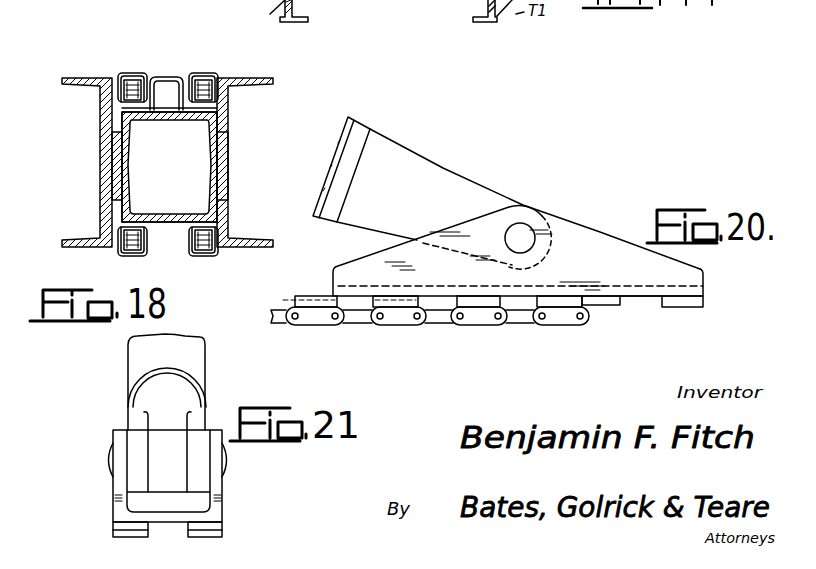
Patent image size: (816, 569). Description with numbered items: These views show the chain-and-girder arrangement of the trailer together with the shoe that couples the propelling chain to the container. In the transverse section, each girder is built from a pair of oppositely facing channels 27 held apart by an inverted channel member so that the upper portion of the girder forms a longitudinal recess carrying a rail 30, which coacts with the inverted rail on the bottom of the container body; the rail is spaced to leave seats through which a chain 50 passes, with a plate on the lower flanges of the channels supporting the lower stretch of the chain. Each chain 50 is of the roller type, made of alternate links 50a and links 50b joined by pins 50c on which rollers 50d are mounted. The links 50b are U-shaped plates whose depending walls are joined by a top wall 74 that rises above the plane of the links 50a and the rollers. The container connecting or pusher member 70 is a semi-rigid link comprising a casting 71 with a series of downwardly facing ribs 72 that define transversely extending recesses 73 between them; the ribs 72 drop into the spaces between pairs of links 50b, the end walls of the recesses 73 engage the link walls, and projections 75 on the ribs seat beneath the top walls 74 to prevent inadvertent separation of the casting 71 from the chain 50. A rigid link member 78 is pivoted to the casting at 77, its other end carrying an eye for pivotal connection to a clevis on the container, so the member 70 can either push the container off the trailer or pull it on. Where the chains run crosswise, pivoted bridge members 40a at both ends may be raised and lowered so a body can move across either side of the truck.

In FIG. 18, the channel 27 is at (100, 154).
In FIG. 18, the rail 30 is at (168, 77).
In FIG. 18, the pivoted bridge member 40a is at (215, 165).
In FIG. 20, the chain 50 is at (364, 325).
In FIG. 18, the link 50a is at (120, 74).
In FIG. 20, the link 50a is at (441, 325).
In FIG. 18, the link 50b is at (218, 77).
In FIG. 20, the link 50b is at (484, 326).
In FIG. 20, the pin 50c is at (463, 326).
In FIG. 18, the roller 50d is at (207, 73).
In FIG. 20, the container connecting or pusher member 70 is at (443, 190).
In FIG. 21, the container connecting or pusher member 70 is at (194, 358).
In FIG. 20, the casting 71 is at (590, 248).
In FIG. 21, the casting 71 is at (213, 484).
In FIG. 20, the rib 72 is at (609, 305).
In FIG. 21, the rib 72 is at (113, 525).
In FIG. 20, the recess 73 is at (643, 300).
In FIG. 18, the top wall 74 is at (133, 73).
In FIG. 20, the top wall 74 is at (308, 296).
In FIG. 20, the projection 75 is at (703, 304).
In FIG. 21, the projection 75 is at (222, 532).
In FIG. 20, the pivot 77 is at (532, 236).
In FIG. 21, the pivot 77 is at (108, 457).
In FIG. 20, the rigid link member 78 is at (377, 142).